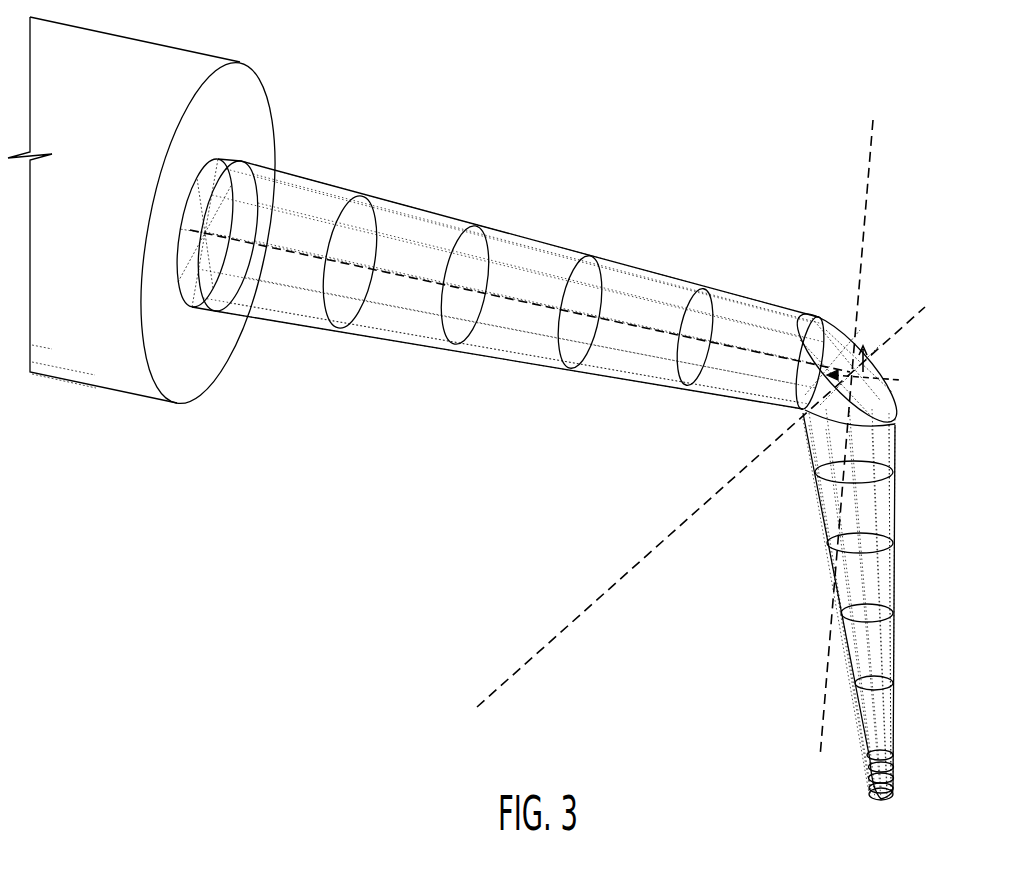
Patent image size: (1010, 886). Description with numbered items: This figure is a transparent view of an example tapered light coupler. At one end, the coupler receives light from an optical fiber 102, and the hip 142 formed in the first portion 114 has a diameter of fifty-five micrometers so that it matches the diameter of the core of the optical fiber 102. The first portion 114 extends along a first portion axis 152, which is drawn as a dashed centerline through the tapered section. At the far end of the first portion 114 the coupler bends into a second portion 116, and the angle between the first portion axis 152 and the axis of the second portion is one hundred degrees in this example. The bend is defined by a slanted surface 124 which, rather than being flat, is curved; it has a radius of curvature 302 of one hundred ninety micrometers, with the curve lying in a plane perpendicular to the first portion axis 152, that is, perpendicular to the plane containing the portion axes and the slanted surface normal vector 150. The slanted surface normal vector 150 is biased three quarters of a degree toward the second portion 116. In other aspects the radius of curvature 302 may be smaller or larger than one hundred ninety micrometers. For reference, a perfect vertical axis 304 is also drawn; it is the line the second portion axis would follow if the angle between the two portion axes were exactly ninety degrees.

The optical fiber 102 is at (138, 387).
The first portion 114 is at (410, 340).
The hip 142 is at (220, 312).
The first portion axis 152 is at (632, 320).
The slanted surface 124 is at (811, 318).
The radius of curvature 302 is at (838, 365).
The slanted surface normal vector 150 is at (886, 343).
The perfect vertical axis 304 is at (828, 658).
The second portion 116 is at (813, 460).